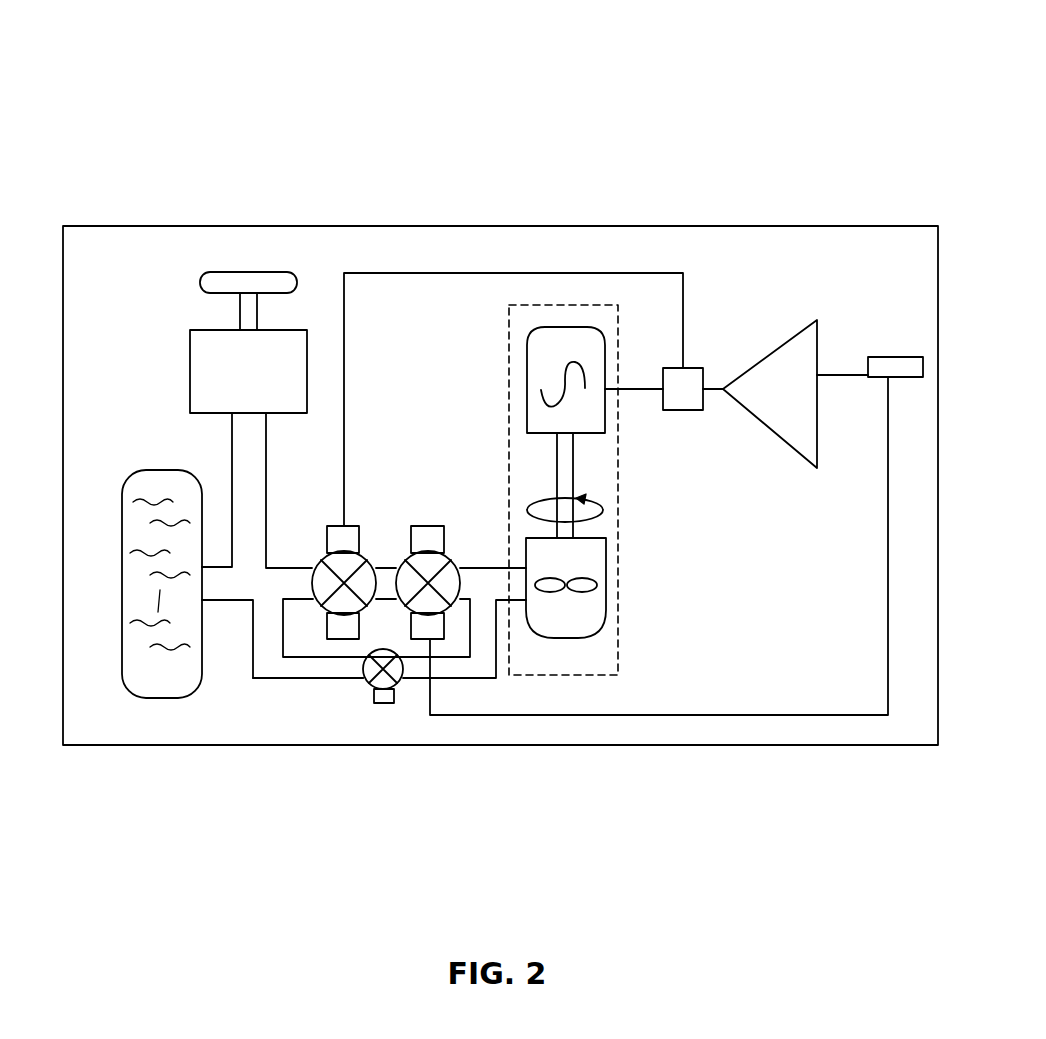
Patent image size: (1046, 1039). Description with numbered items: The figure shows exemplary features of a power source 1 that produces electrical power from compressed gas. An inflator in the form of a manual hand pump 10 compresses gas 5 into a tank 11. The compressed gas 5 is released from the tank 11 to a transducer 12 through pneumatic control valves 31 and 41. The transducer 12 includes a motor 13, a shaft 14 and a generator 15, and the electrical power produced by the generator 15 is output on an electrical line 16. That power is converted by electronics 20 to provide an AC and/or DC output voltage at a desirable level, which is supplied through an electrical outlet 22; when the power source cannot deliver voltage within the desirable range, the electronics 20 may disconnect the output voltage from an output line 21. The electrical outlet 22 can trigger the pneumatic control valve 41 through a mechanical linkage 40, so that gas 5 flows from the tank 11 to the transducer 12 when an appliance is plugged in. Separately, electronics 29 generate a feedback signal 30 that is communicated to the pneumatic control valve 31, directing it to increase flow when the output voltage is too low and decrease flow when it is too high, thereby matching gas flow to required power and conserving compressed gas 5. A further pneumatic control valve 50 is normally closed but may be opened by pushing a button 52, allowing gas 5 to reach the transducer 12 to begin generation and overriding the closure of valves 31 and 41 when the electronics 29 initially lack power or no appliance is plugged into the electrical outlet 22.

The power source 1 is at (461, 128).
The gas 5 is at (160, 612).
The manual hand pump 10 is at (230, 350).
The tank 11 is at (140, 473).
The transducer 12 is at (600, 658).
The motor 13 is at (571, 615).
The shaft 14 is at (568, 473).
The generator 15 is at (580, 343).
The electrical line 16 is at (640, 389).
The electronics 20 is at (778, 373).
The output line 21 is at (838, 375).
The electrical outlet 22 is at (895, 358).
The electronics 29 is at (690, 382).
The feedback signal 30 is at (370, 272).
The pneumatic control valve 31 is at (335, 612).
The mechanical linkage 40 is at (846, 715).
The pneumatic control valve 41 is at (420, 628).
The pneumatic control valve 50 is at (372, 683).
The button 52 is at (382, 703).